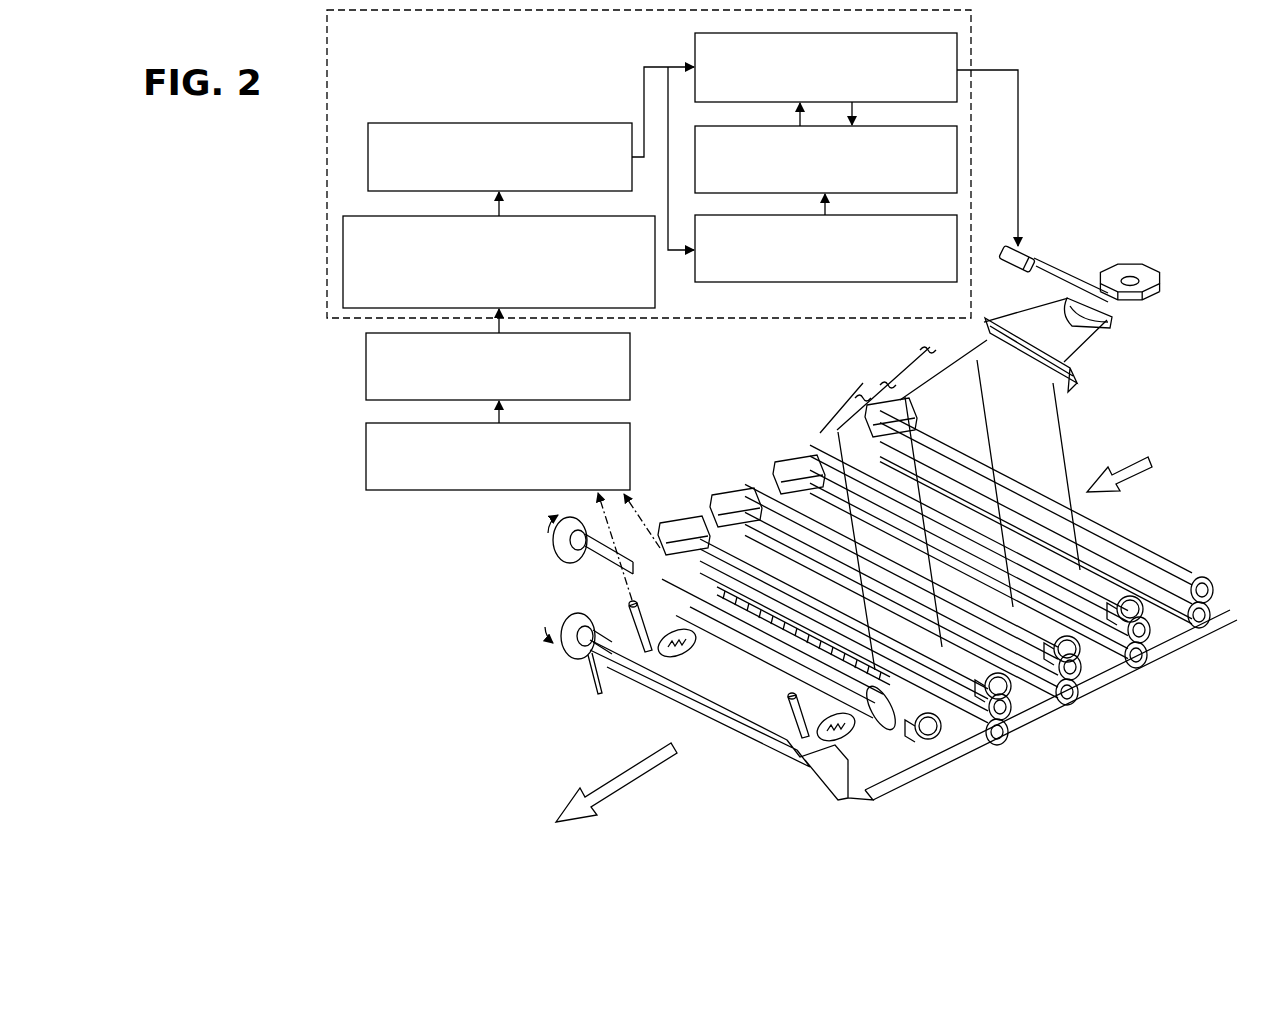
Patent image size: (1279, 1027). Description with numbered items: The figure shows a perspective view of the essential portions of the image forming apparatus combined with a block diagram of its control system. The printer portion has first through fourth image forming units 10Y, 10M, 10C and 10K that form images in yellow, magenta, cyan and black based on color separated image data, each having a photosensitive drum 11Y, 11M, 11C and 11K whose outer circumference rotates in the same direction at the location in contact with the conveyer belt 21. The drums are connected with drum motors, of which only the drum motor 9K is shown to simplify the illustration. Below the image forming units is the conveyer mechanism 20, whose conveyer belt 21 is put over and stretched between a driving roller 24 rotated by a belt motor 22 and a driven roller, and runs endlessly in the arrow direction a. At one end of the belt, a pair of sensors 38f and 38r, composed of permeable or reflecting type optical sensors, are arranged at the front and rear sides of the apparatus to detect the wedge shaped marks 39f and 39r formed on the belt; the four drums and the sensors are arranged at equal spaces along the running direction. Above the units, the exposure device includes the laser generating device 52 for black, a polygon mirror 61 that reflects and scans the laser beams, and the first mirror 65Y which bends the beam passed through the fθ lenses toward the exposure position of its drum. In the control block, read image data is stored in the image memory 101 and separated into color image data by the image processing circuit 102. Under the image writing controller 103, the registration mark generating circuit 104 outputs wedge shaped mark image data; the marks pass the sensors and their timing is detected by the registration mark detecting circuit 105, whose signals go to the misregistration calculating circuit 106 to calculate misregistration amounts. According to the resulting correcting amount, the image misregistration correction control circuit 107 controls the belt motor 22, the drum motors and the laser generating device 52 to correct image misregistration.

The image memory 101 is at (957, 36).
The image processing circuit 102 is at (957, 128).
The image writing controller 103 is at (570, 123).
The registration mark generating circuit 104 is at (957, 214).
The registration mark detecting circuit 105 is at (630, 456).
The misregistration calculating circuit 106 is at (630, 380).
The image misregistration correction control circuit 107 is at (634, 318).
The laser generating device 52 is at (1034, 252).
The polygon mirror 61 is at (1147, 273).
The first mirror 65Y is at (1079, 386).
The arrow direction a is at (1146, 479).
The drum motor 9K is at (557, 551).
The belt motor 22 is at (570, 650).
The sensor 38r is at (626, 608).
The wedge shaped mark 39r is at (672, 655).
The sensor 38f is at (795, 742).
The wedge shaped mark 39f is at (840, 740).
The driving roller 24 is at (800, 770).
The conveyer mechanism 20 is at (774, 828).
The conveyer belt 21 is at (863, 725).
The image forming unit 10K is at (1008, 745).
The photosensitive drum 11K is at (938, 748).
The image forming unit 10C is at (1080, 706).
The photosensitive drum 11C is at (1019, 700).
The image forming unit 10M is at (1150, 666).
The photosensitive drum 11M is at (1086, 660).
The image forming unit 10Y is at (1210, 629).
The photosensitive drum 11Y is at (1153, 622).